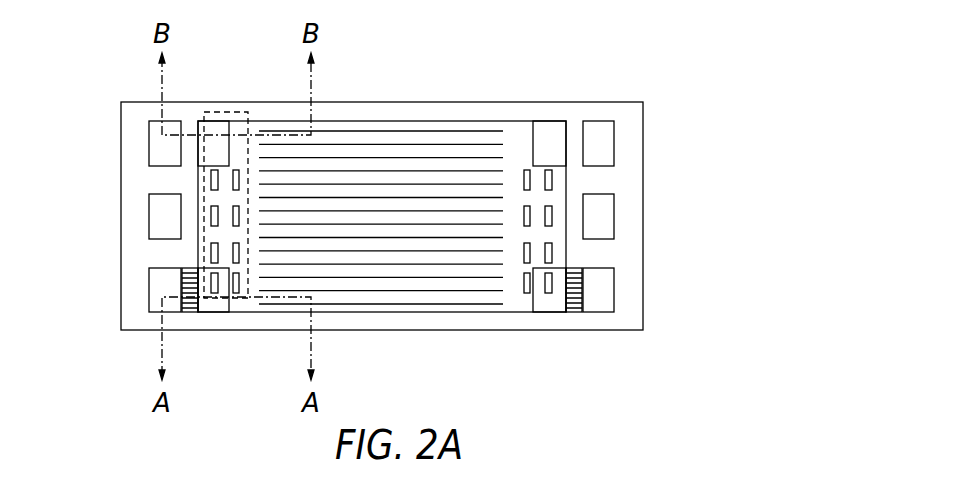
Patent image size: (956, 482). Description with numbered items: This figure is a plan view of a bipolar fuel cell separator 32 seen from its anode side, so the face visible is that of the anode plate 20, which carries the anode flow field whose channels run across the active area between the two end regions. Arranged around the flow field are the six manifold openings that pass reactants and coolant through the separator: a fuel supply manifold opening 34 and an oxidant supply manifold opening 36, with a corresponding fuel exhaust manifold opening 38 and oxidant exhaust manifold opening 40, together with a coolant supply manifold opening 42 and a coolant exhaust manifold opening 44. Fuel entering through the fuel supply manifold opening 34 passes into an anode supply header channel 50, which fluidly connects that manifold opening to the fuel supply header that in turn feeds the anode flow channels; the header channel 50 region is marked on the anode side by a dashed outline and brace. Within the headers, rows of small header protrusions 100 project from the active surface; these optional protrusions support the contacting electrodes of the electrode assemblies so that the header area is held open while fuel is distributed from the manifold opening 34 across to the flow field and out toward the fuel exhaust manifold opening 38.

The anode plate 20 is at (527, 112).
The bipolar fuel cell separator 32 is at (718, 72).
The fuel supply manifold opening 34 is at (160, 287).
The oxidant supply manifold opening 36 is at (160, 148).
The fuel exhaust manifold opening 38 is at (604, 293).
The oxidant exhaust manifold opening 40 is at (604, 146).
The coolant supply manifold opening 42 is at (160, 218).
The coolant exhaust manifold opening 44 is at (604, 218).
The anode supply header channel 50 is at (250, 314).
The header protrusions 100 is at (524, 252).